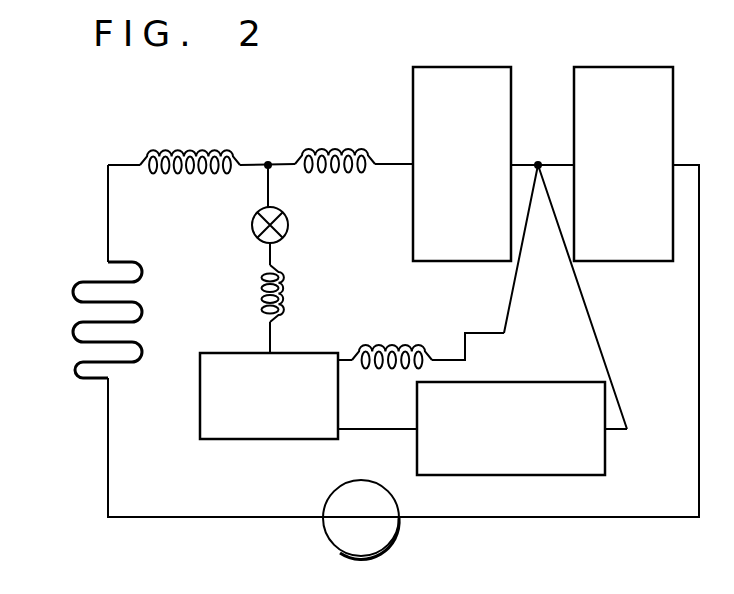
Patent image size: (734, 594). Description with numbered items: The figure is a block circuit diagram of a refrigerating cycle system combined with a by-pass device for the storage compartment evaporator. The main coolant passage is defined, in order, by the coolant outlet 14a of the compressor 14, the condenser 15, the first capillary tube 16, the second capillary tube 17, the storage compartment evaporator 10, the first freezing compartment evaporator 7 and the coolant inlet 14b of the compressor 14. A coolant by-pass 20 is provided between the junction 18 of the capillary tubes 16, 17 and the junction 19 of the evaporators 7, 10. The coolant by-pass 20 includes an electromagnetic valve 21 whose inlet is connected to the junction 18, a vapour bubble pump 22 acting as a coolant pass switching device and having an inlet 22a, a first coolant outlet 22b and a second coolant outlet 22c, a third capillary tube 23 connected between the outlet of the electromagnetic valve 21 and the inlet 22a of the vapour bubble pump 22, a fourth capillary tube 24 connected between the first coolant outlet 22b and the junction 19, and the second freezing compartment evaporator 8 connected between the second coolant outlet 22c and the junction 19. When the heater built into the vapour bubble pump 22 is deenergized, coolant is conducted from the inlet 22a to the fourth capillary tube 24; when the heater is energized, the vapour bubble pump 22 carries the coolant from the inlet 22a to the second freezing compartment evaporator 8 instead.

The first freezing compartment evaporator 7 is at (622, 66).
The second freezing compartment evaporator 8 is at (543, 381).
The storage compartment evaporator 10 is at (460, 66).
The compressor 14 is at (364, 480).
The coolant outlet 14a is at (322, 522).
The coolant inlet 14b is at (402, 522).
The condenser 15 is at (62, 337).
The first capillary tube 16 is at (197, 153).
The second capillary tube 17 is at (337, 153).
The junction 18 is at (268, 162).
The junction 19 is at (538, 162).
The coolant by-pass 20 is at (348, 302).
The electromagnetic valve 21 is at (251, 228).
The vapour bubble pump 22 is at (221, 440).
The inlet 22a is at (262, 341).
The first coolant outlet 22b is at (339, 352).
The second coolant outlet 22c is at (341, 428).
The third capillary tube 23 is at (285, 292).
The fourth capillary tube 24 is at (391, 348).